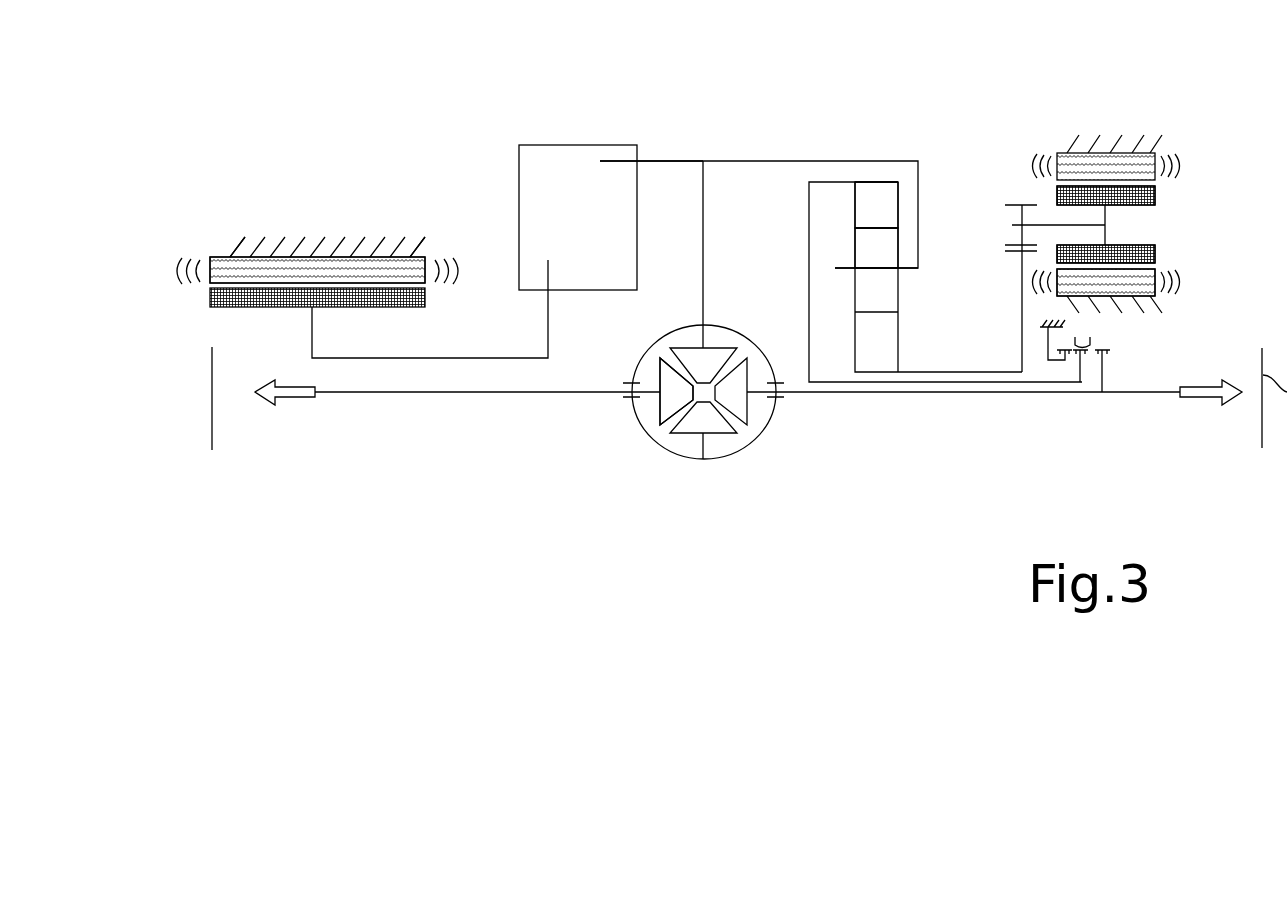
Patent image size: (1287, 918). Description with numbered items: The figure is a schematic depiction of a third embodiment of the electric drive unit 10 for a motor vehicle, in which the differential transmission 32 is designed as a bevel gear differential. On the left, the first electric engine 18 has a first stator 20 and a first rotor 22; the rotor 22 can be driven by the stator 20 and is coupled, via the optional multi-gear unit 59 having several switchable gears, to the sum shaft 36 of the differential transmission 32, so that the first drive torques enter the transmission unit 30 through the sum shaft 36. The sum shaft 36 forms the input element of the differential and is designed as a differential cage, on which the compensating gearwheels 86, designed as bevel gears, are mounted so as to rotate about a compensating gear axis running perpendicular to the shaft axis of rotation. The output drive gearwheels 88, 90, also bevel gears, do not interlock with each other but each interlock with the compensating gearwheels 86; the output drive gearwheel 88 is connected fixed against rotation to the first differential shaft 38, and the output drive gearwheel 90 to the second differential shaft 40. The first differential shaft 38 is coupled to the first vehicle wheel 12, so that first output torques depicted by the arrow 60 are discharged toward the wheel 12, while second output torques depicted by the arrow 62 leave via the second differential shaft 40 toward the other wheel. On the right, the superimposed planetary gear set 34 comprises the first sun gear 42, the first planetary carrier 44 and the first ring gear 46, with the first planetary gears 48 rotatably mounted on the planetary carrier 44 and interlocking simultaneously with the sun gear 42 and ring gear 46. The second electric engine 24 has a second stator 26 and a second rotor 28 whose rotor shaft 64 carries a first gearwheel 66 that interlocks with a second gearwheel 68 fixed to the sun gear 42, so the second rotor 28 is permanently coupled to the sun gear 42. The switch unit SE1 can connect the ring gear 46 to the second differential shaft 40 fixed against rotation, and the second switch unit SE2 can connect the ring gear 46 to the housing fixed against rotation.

The electric drive unit 10 is at (1155, 126).
The first vehicle wheel 12 is at (208, 378).
The first electric engine 18 is at (265, 260).
The first stator 20 is at (226, 256).
The first rotor 22 is at (288, 310).
The second electric engine 24 is at (1105, 142).
The second stator 26 is at (1147, 168).
The second rotor 28 is at (1140, 250).
The transmission unit 30 is at (897, 170).
The differential transmission 32 is at (682, 322).
The superimposed planetary gear set 34 is at (877, 170).
The sum shaft 36 is at (757, 340).
The first differential shaft 38 is at (497, 400).
The second differential shaft 40 is at (875, 394).
The first sun gear 42 is at (873, 358).
The first planetary carrier 44 is at (905, 268).
The first ring gear 46 is at (867, 190).
The first planetary gears 48 is at (862, 252).
The multi-gear unit 59 is at (563, 153).
The arrow 60 is at (290, 398).
The arrow 62 is at (1210, 396).
The rotor shaft 64 is at (1085, 225).
The first gearwheel 66 is at (1007, 246).
The second gearwheel 68 is at (1012, 253).
The compensating gearwheels 86 is at (715, 357).
The output drive gearwheel 88 is at (672, 400).
The output drive gearwheel 90 is at (737, 405).
The switch unit SE1 is at (1093, 338).
The second switch unit SE2 is at (1048, 338).